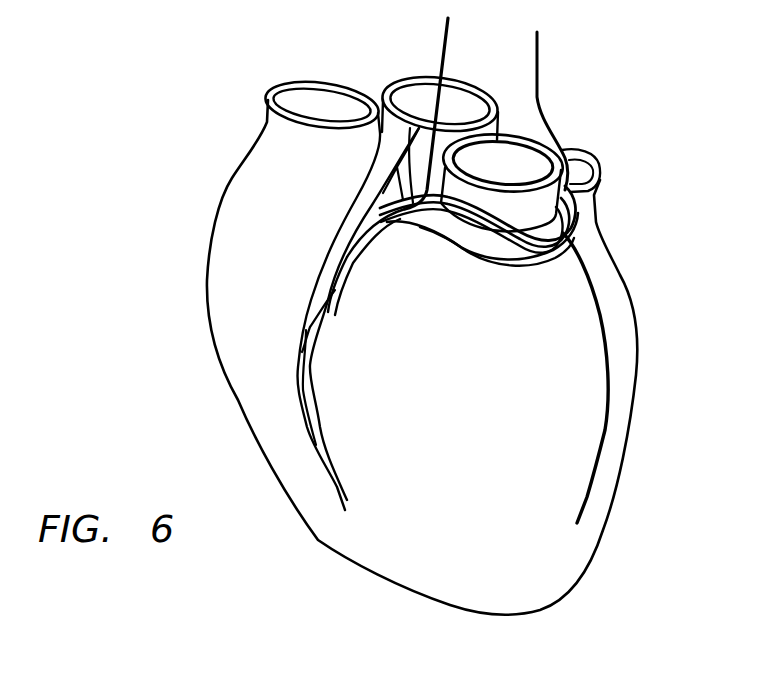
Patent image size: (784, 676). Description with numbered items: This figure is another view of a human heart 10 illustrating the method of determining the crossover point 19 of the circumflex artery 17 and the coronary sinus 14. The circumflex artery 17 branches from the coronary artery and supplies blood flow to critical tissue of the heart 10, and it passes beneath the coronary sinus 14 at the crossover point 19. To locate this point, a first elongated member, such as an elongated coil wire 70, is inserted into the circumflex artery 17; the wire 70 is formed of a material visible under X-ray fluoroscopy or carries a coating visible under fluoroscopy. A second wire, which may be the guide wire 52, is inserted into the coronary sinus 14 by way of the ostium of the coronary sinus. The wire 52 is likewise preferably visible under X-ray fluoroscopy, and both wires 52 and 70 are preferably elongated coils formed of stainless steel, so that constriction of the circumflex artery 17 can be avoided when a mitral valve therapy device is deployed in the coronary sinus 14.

The human heart 10 is at (672, 142).
The coronary sinus 14 is at (481, 236).
The circumflex artery 17 is at (395, 178).
The crossover point 19 is at (413, 217).
The guide wire 52 is at (540, 63).
The coil wire 70 is at (440, 48).